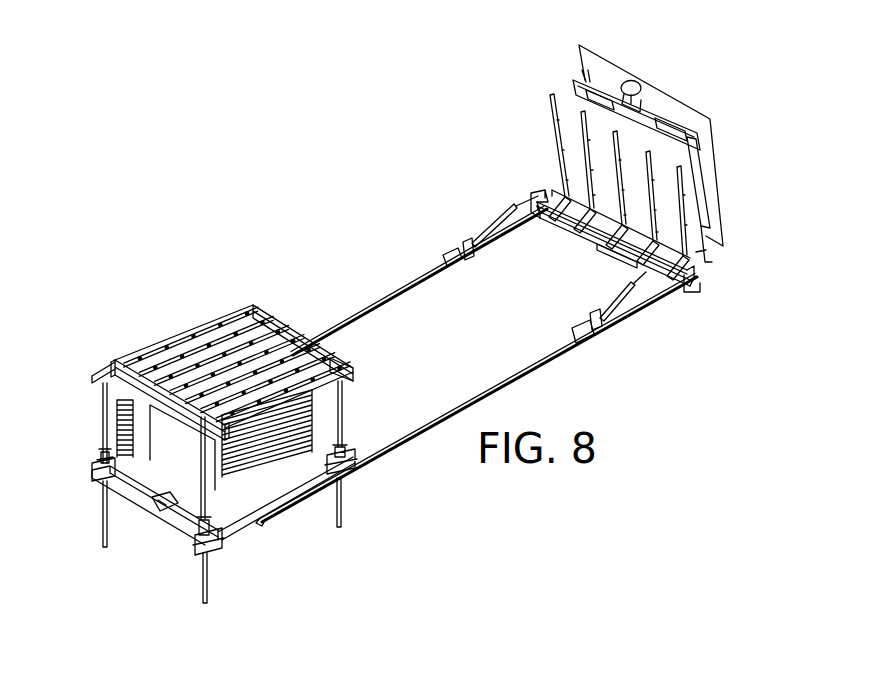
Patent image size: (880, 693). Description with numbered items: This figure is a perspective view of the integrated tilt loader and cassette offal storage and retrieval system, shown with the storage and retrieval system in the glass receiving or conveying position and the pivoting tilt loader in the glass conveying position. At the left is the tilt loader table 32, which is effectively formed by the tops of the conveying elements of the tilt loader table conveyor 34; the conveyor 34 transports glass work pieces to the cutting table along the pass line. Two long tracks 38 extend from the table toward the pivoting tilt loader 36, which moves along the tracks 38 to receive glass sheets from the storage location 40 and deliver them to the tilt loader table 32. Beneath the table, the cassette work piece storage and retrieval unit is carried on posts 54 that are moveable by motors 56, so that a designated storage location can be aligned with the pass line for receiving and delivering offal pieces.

The tilt loader table 32 is at (189, 321).
The tilt loader table conveyor 34 is at (147, 365).
The pivoting tilt loader 36 is at (575, 212).
The tracks 38 is at (513, 380).
The storage location 40 is at (727, 182).
The posts 54 is at (103, 430).
The motors 56 is at (98, 470).